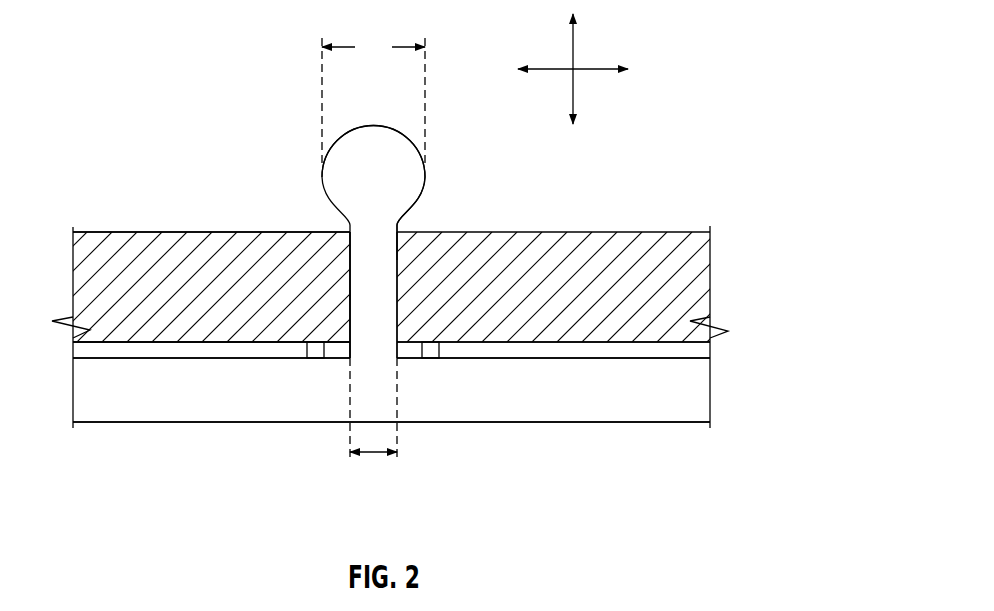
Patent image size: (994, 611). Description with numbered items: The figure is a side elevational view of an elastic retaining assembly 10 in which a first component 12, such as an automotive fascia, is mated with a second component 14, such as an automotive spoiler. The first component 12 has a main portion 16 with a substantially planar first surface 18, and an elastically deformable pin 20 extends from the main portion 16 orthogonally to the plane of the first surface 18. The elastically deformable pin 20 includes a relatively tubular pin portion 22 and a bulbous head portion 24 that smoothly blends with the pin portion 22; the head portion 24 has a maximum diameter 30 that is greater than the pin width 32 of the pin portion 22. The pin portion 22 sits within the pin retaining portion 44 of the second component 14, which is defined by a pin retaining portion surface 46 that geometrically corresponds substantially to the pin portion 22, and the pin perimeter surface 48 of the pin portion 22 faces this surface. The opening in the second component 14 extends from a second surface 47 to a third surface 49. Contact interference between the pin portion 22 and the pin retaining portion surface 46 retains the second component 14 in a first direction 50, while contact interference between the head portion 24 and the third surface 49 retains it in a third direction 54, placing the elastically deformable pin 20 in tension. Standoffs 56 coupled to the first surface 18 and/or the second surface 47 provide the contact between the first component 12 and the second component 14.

The elastic retaining assembly 10 is at (138, 37).
The first component 12 is at (147, 430).
The second component 14 is at (666, 217).
The main portion 16 is at (571, 400).
The first surface 18 is at (200, 360).
The elastically deformable pin 20 is at (446, 180).
The pin portion 22 is at (376, 346).
The head portion 24 is at (351, 153).
The maximum diameter 30 is at (373, 99).
The pin width 32 is at (372, 454).
The pin retaining portion 44 is at (357, 307).
The pin retaining portion surface 46 is at (397, 258).
The second surface 47 is at (156, 342).
The pin perimeter surface 48 is at (349, 258).
The third surface 49 is at (190, 232).
The first direction 50 is at (550, 66).
The third direction 54 is at (577, 34).
The standoffs 56 is at (315, 354).